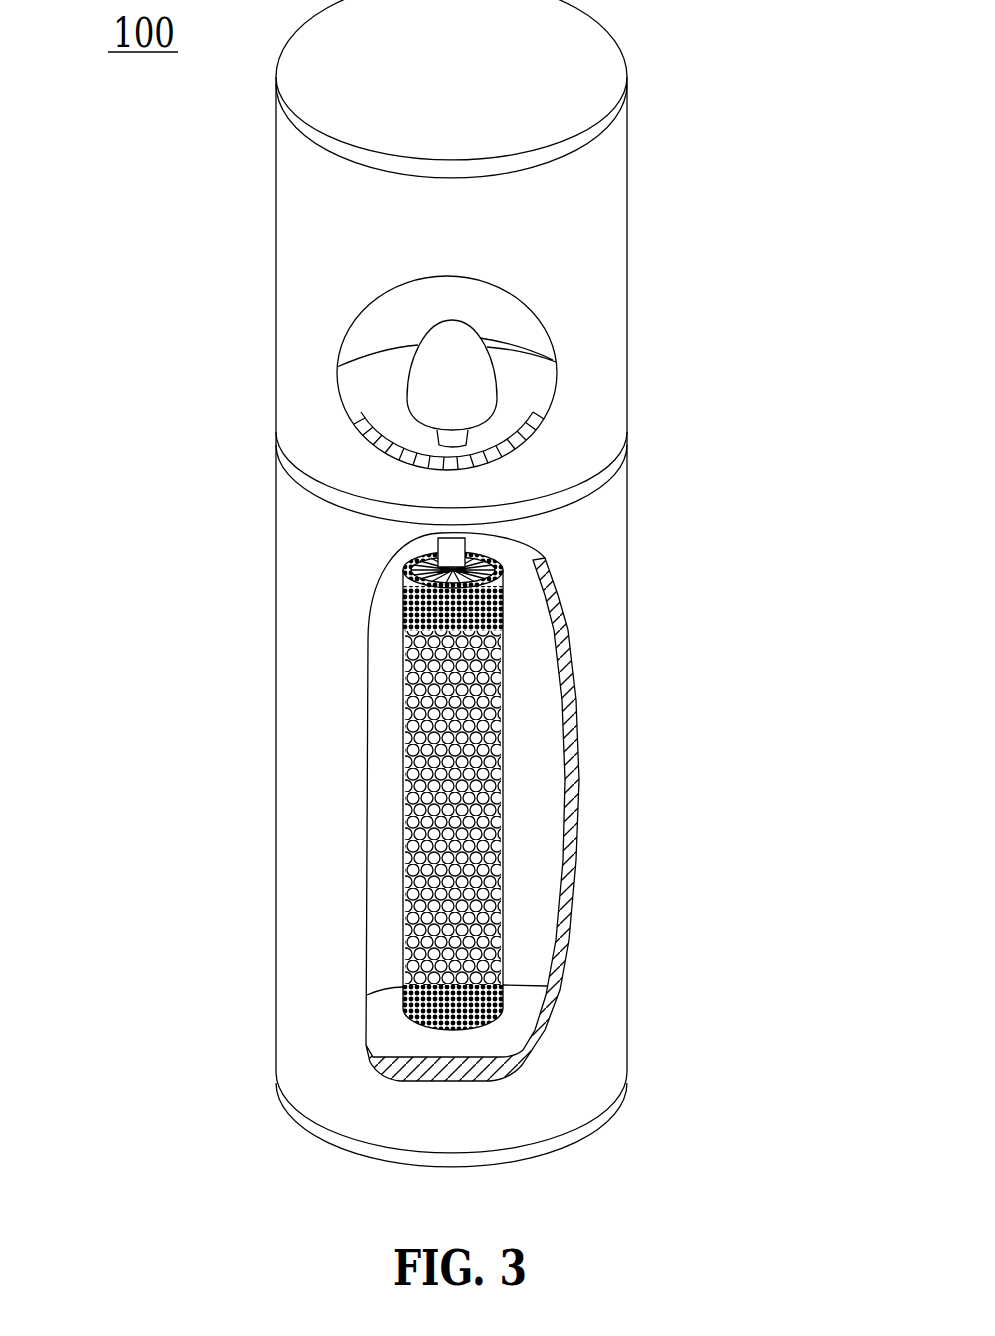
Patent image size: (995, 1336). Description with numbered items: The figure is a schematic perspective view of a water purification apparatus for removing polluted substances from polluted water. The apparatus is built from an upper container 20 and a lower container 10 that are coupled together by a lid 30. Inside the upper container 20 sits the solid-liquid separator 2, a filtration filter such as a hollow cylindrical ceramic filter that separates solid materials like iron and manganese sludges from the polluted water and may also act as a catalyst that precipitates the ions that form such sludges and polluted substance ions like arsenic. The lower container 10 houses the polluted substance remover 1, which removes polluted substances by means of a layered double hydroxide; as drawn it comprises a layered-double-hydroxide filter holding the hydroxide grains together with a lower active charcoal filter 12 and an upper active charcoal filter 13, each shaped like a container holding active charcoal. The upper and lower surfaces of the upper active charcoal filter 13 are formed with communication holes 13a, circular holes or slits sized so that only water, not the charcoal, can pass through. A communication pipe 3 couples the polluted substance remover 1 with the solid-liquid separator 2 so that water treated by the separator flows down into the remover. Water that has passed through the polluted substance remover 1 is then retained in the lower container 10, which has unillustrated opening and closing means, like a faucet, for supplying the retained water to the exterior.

The upper container 20 is at (572, 222).
The solid-liquid separator 2 is at (446, 337).
The lid 30 is at (570, 492).
The lower container 10 is at (600, 792).
The lower active charcoal filter 12 is at (547, 987).
The upper active charcoal filter 13 is at (454, 750).
The communication hole 13a is at (436, 578).
The communication pipe 3 is at (449, 550).
The polluted substance remover 1 is at (394, 798).